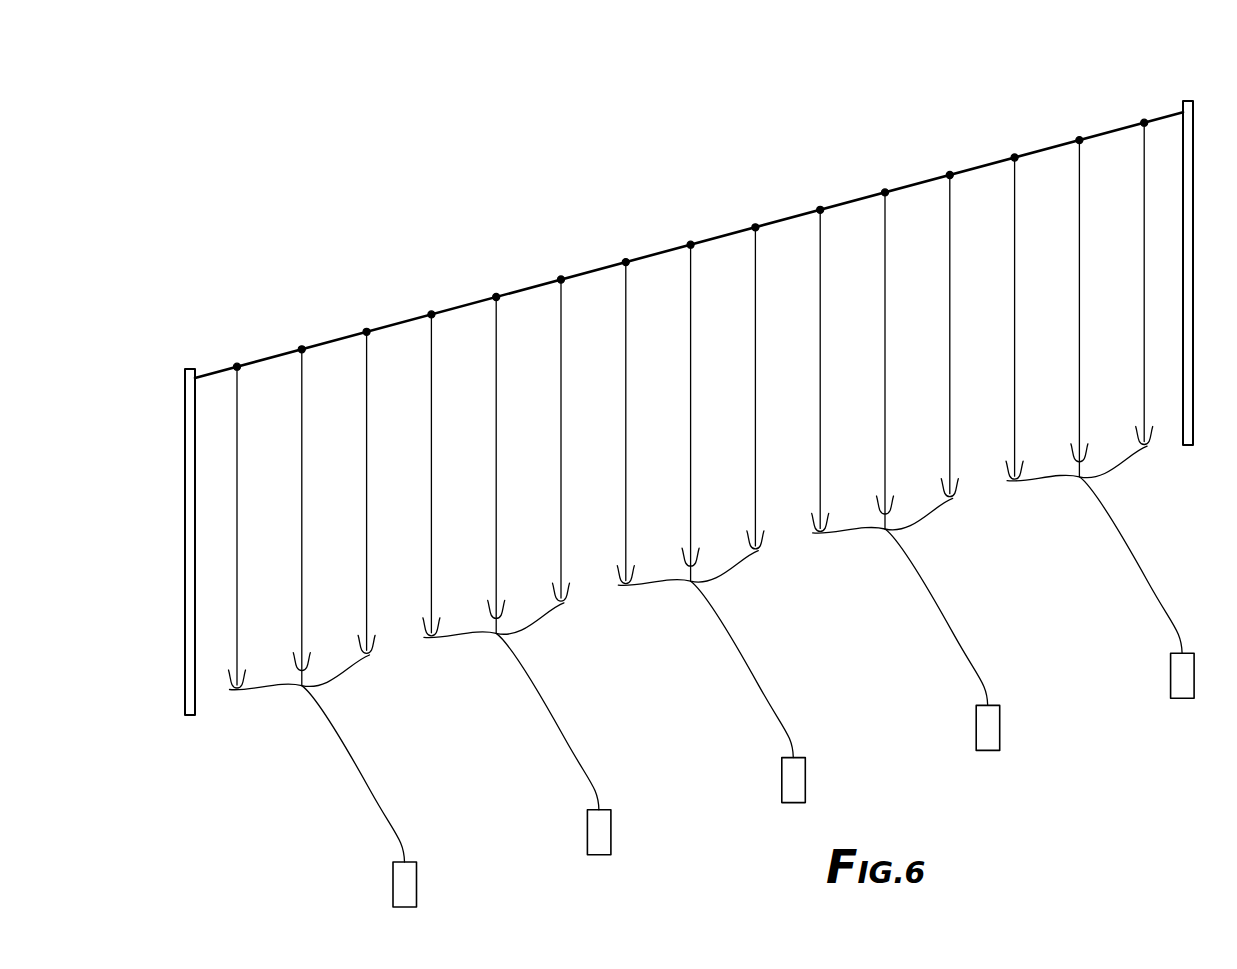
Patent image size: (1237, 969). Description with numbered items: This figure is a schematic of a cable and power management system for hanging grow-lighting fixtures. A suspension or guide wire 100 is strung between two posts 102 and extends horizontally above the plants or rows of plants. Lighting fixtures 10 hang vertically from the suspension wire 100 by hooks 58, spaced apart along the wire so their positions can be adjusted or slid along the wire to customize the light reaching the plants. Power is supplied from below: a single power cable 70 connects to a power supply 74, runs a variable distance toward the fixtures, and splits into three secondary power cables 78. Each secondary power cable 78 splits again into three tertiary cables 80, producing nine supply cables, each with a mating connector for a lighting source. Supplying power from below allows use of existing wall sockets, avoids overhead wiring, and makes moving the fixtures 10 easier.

The lighting fixture 10 is at (1079, 212).
The hook 58 is at (691, 245).
The power cable 70 is at (365, 779).
The power supply 74 is at (416, 877).
The secondary power cable 78 is at (266, 691).
The tertiary cable 80 is at (230, 688).
The suspension wire 100 is at (867, 197).
The post 102 is at (1193, 128).